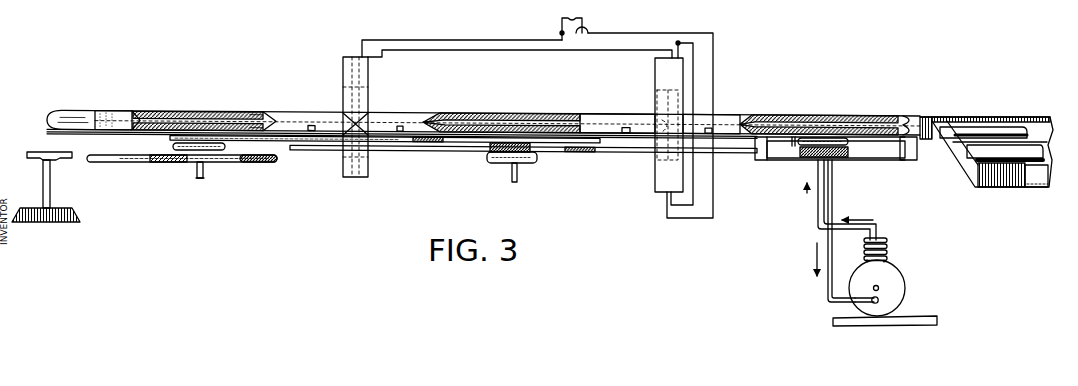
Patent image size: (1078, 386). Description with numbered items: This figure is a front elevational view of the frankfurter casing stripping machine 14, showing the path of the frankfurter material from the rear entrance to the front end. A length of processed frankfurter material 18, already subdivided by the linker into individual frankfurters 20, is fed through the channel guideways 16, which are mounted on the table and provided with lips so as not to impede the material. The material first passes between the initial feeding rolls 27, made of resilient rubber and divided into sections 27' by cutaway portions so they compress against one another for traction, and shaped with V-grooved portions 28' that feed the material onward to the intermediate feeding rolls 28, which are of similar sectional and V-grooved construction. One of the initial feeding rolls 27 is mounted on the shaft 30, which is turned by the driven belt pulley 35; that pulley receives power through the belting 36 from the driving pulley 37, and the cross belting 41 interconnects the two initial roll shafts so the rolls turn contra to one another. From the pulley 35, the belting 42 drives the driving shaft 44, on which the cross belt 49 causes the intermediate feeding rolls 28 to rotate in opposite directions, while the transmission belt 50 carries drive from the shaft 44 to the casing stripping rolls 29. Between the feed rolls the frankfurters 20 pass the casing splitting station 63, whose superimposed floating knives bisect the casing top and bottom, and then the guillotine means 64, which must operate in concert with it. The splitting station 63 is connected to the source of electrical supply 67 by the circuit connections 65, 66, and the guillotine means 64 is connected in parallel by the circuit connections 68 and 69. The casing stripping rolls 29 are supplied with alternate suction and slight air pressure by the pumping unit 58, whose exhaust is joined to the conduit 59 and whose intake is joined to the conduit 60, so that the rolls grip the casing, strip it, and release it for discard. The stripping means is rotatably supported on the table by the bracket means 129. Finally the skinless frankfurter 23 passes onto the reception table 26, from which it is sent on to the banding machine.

The stripping machine 14 is at (296, 104).
The channel guideways 16 is at (112, 109).
The processed frankfurter material 18 is at (78, 104).
The frankfurters 20 is at (411, 116).
The skinless frankfurter 23 is at (997, 147).
The reception table 26 is at (1008, 228).
The initial feeding rolls 27 is at (198, 103).
The sections 27' is at (198, 95).
The intermediate feeding rolls 28 is at (501, 157).
The V-grooved portions 28' is at (253, 104).
The casing stripping rolls 29 is at (822, 116).
The shaft 30 is at (205, 175).
The driven belt pulley 35 is at (270, 163).
The belting 36 is at (105, 163).
The driving pulley 37 is at (72, 221).
The cross belting 41 is at (172, 147).
The belting 42 is at (413, 140).
The driving shaft 44 is at (518, 178).
The cross belt 49 is at (538, 158).
The transmission belt 50 is at (620, 149).
The pumping unit 58 is at (905, 270).
The conduit 59 is at (817, 212).
The conduit 60 is at (826, 204).
The casing splitting station 63 is at (342, 80).
The guillotine means 64 is at (654, 80).
The circuit connection 65 is at (475, 51).
The circuit connection 66 is at (490, 39).
The source of electrical supply 67 is at (573, 20).
The circuit connection 68 is at (714, 46).
The circuit connection 69 is at (695, 70).
The bracket means 129 is at (778, 162).